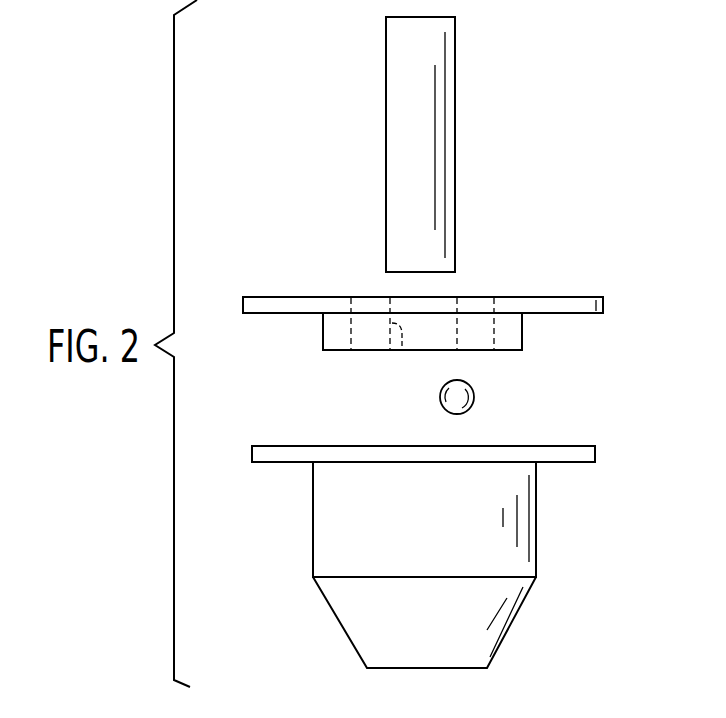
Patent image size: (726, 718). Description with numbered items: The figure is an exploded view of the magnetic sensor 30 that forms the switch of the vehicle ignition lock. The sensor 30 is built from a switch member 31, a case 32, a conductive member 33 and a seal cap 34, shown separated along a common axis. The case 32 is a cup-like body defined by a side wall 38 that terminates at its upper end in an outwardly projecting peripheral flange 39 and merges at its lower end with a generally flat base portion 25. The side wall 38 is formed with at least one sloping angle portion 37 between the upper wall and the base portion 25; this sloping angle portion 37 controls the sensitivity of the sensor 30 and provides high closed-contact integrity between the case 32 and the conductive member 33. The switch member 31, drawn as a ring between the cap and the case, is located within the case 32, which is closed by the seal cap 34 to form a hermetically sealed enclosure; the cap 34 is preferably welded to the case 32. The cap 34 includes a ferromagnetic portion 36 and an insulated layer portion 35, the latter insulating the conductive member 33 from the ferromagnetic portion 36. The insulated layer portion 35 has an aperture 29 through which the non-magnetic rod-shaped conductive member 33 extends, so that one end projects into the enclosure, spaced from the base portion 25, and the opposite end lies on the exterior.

The magnetic sensor 30 is at (295, 69).
The conductive member 33 is at (455, 143).
The seal cap 34 is at (567, 296).
The insulated layer portion 35 is at (478, 296).
The ferromagnetic portion 36 is at (603, 306).
The aperture 29 is at (398, 351).
The switch member 31 is at (475, 383).
The peripheral flange 39 is at (597, 455).
The case 32 is at (540, 494).
The side wall 38 is at (537, 520).
The sloping angle portion 37 is at (526, 600).
The base portion 25 is at (455, 668).